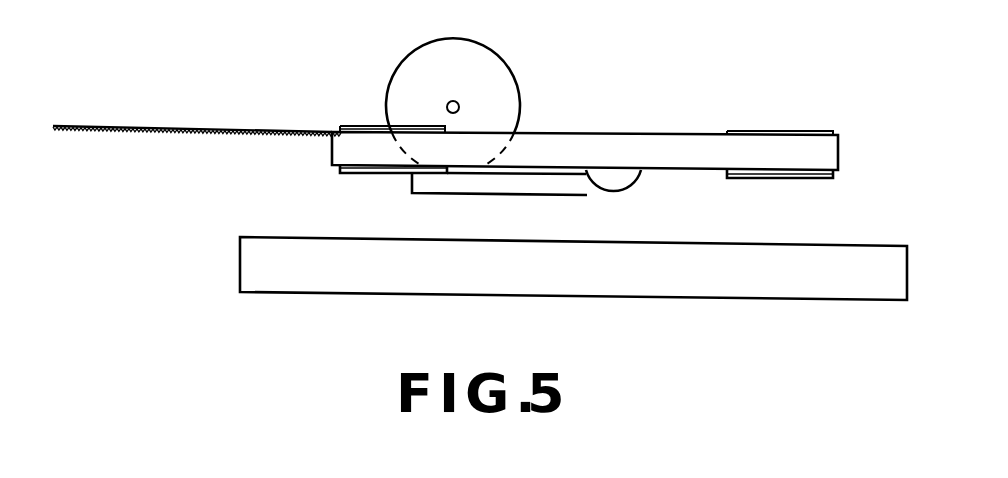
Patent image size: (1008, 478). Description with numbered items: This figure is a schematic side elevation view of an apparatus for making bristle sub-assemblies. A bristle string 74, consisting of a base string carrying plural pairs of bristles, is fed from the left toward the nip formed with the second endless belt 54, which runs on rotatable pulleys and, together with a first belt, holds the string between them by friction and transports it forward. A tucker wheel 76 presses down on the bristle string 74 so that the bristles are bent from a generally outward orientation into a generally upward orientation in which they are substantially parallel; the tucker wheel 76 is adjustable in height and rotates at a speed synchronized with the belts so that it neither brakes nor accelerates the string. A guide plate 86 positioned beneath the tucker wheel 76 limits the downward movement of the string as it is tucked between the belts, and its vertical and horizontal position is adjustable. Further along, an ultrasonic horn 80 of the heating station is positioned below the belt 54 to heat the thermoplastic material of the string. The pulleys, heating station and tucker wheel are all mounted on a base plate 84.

The second endless belt 54 is at (640, 135).
The bristle string 74 is at (188, 121).
The tucker wheel 76 is at (473, 63).
The ultrasonic horn 80 is at (630, 188).
The base plate 84 is at (665, 298).
The guide plate 86 is at (543, 190).